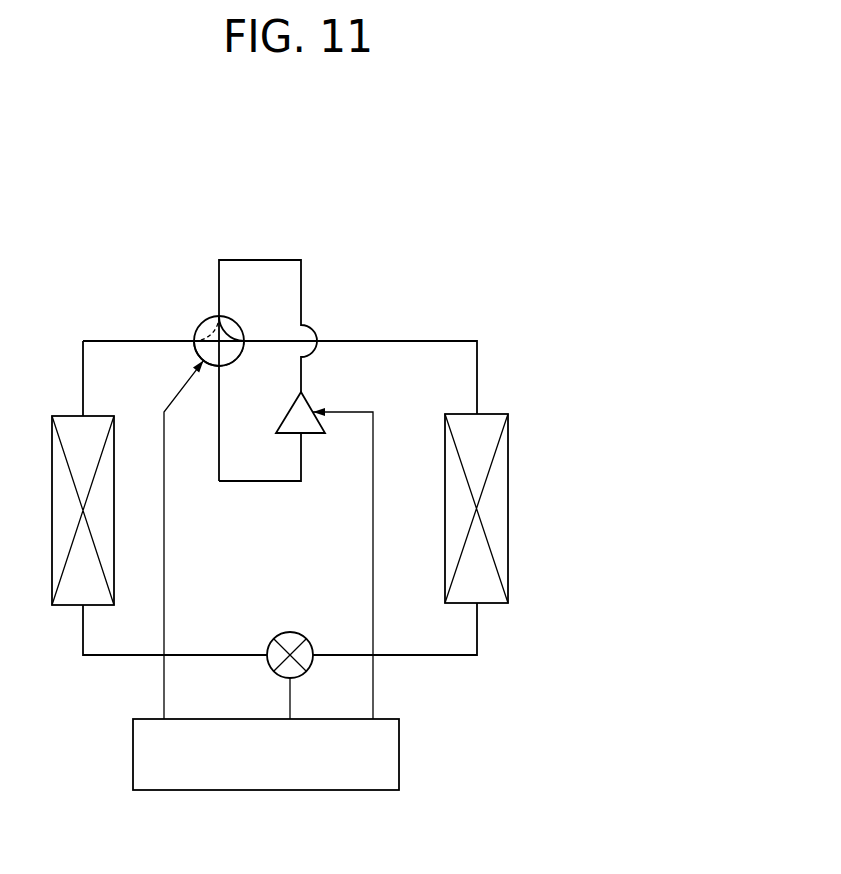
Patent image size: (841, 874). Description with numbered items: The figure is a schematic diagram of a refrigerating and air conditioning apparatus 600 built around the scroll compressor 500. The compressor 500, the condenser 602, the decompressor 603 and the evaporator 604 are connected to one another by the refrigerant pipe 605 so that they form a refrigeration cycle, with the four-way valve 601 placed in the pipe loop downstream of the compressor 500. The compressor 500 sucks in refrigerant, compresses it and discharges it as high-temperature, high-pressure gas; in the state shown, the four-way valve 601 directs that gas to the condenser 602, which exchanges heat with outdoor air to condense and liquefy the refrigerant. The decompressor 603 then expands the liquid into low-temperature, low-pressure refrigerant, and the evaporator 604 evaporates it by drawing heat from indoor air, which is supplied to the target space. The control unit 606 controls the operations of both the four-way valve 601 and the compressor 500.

The refrigerating and air conditioning apparatus 600 is at (375, 197).
The four-way valve 601 is at (202, 325).
The condenser 602 is at (493, 413).
The decompressor 603 is at (288, 631).
The evaporator 604 is at (70, 414).
The refrigerant pipe 605 is at (445, 340).
The control unit 606 is at (218, 718).
The scroll compressor 500 is at (313, 404).